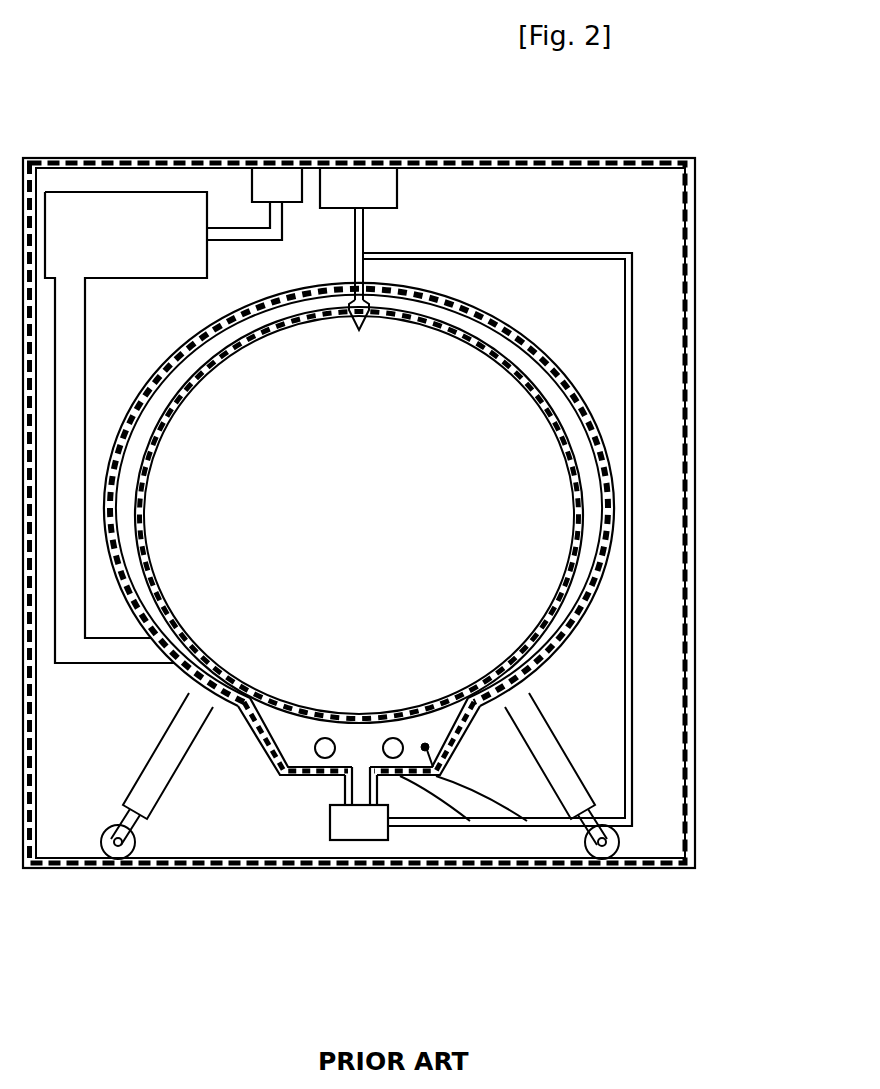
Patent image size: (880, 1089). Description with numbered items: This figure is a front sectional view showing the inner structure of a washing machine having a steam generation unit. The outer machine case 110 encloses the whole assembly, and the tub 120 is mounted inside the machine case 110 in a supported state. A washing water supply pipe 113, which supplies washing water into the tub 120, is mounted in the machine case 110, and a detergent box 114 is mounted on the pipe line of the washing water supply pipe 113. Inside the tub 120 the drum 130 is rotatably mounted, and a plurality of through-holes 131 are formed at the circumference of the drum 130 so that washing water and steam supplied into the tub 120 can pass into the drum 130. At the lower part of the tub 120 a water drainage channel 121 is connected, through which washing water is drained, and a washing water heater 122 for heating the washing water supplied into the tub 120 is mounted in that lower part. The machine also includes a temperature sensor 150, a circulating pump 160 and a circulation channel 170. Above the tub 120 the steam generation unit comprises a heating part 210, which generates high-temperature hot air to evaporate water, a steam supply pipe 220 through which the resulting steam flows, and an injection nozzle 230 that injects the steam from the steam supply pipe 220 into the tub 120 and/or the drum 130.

The machine case 110 is at (512, 156).
The washing water supply pipe 113 is at (230, 233).
The detergent box 114 is at (110, 210).
The tub 120 is at (573, 388).
The water drainage channel 121 is at (343, 787).
The washing water heater 122 is at (470, 822).
The drum 130 is at (584, 474).
The through-holes 131 is at (583, 517).
The temperature sensor 150 is at (527, 822).
The circulating pump 160 is at (363, 840).
The circulation channel 170 is at (632, 285).
The heating part 210 is at (353, 182).
The steam supply pipe 220 is at (355, 272).
The injection nozzle 230 is at (357, 328).